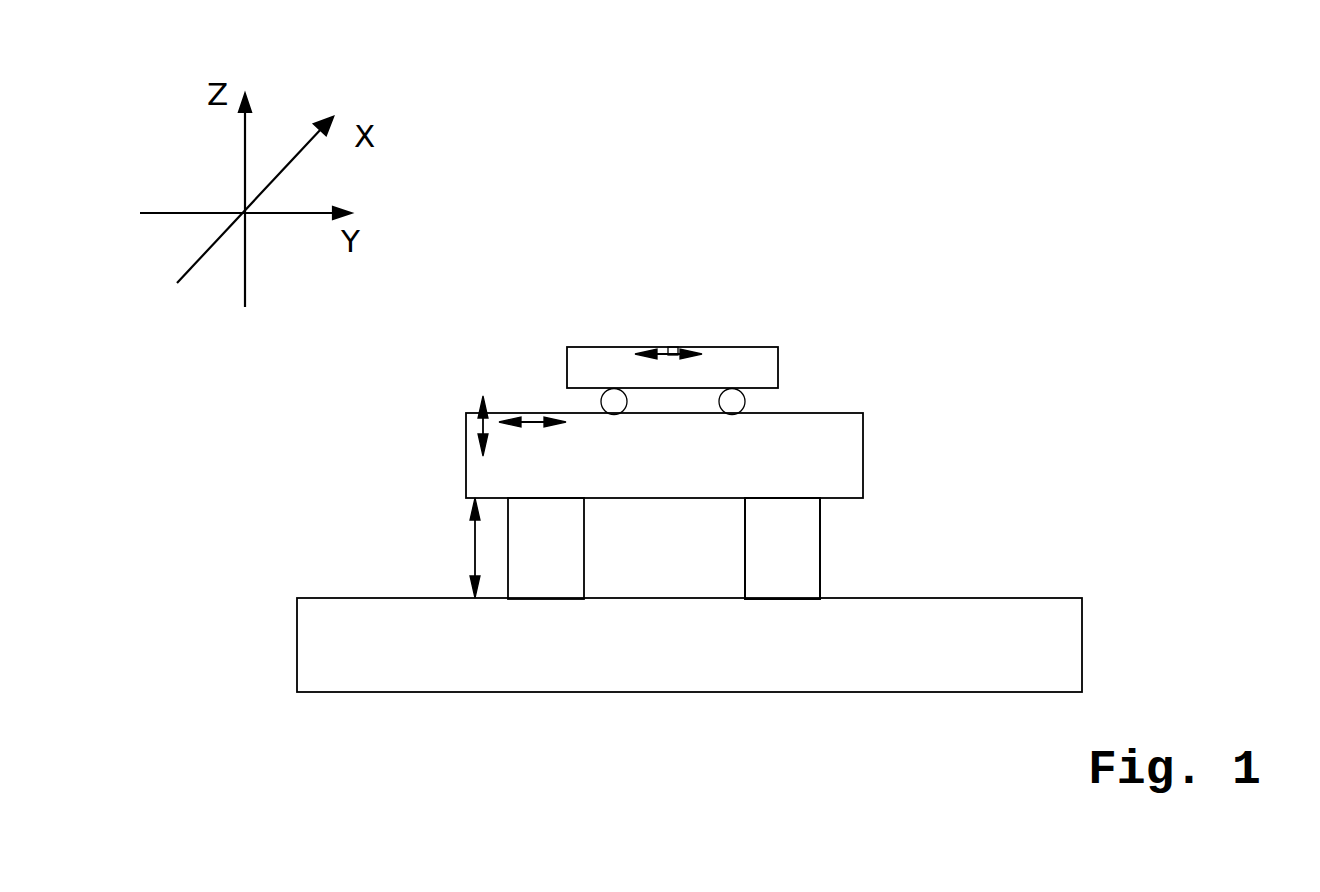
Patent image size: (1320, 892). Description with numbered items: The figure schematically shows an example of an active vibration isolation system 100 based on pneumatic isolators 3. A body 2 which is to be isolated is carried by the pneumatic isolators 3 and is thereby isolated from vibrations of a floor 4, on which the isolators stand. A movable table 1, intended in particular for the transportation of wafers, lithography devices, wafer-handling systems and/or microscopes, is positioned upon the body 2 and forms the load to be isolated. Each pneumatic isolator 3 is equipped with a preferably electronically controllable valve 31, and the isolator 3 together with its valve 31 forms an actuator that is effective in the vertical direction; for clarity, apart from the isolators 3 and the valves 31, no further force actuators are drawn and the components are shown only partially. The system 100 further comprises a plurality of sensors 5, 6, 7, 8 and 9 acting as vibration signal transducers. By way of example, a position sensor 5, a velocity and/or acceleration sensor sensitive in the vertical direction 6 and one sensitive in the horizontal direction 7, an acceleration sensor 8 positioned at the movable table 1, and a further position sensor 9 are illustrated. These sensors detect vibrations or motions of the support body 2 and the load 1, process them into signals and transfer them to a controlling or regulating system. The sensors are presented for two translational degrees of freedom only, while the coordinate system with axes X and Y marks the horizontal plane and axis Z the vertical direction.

The vibration isolation system 100 is at (1055, 157).
The movable table 1 is at (757, 363).
The body 2 is at (820, 453).
The pneumatic isolator 3 is at (800, 572).
The controllable valve 31 is at (941, 544).
The floor 4 is at (928, 616).
The position sensor 5 is at (475, 548).
The vertical direction sensor 6 is at (483, 425).
The horizontal direction sensor 7 is at (532, 422).
The acceleration sensor 8 is at (667, 347).
The position sensor 9 is at (675, 347).